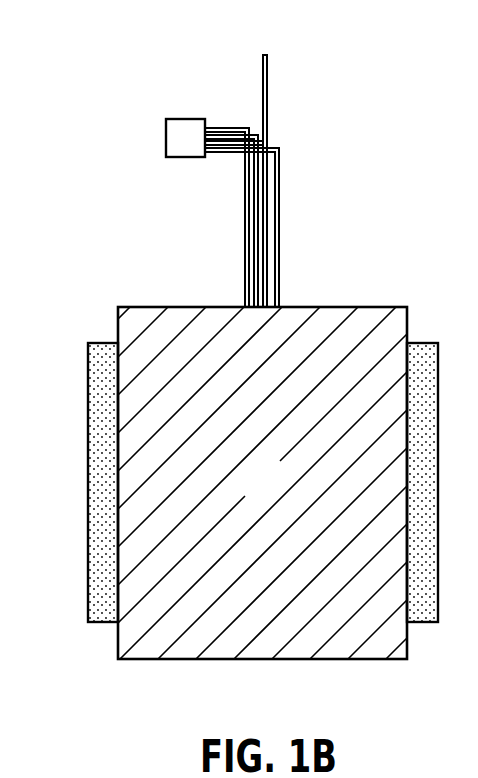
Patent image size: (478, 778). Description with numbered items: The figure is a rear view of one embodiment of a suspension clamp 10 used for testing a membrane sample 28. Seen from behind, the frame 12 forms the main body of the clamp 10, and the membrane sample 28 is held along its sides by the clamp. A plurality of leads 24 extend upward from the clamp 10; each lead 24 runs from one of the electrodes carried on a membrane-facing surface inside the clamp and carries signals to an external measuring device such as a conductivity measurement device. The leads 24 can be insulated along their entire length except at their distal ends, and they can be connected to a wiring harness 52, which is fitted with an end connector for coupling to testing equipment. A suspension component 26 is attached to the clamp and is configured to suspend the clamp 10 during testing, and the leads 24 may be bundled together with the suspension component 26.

The suspension clamp 10 is at (404, 178).
The frame 12 is at (277, 492).
The lead 24 is at (272, 192).
The suspension component 26 is at (263, 82).
The membrane sample 28 is at (107, 497).
The wiring harness 52 is at (186, 142).